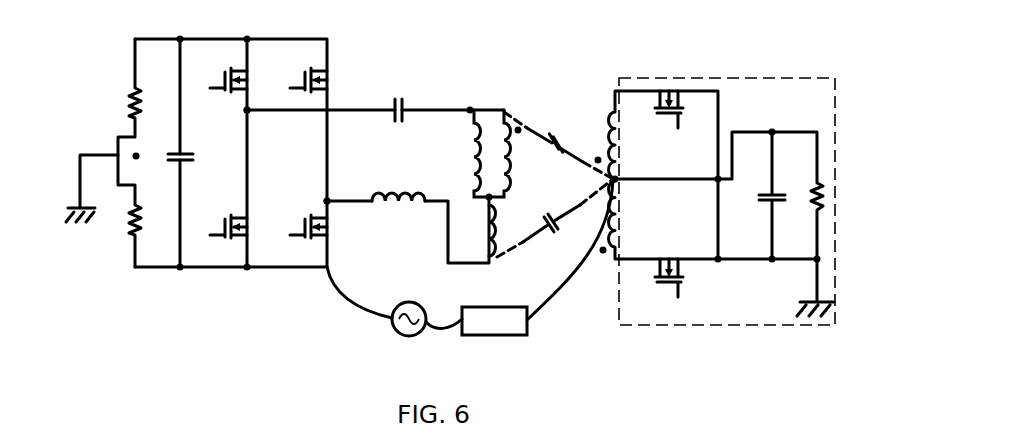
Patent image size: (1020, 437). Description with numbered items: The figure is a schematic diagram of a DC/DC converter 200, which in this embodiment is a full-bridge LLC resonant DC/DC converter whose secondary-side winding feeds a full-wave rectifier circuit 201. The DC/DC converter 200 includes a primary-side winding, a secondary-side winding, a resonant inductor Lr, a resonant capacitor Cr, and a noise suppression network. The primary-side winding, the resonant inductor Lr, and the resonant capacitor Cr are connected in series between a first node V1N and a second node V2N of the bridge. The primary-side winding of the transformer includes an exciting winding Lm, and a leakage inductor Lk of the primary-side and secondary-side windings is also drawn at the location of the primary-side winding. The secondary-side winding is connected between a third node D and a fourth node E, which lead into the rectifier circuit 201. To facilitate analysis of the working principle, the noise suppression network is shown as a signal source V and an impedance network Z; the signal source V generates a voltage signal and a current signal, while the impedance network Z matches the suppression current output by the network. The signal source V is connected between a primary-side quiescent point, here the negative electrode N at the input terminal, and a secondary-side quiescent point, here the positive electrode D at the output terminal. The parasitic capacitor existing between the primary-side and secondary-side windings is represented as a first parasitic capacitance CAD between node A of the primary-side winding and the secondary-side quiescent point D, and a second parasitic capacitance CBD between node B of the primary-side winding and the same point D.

The DC/DC converter 200 is at (98, 31).
The rectifier circuit 201 is at (650, 72).
The resonant capacitor Cr is at (425, 106).
The resonant inductor Lr is at (427, 230).
The exciting winding Lm is at (473, 153).
The leakage inductor Lk is at (476, 230).
The signal source V is at (427, 294).
The impedance network Z is at (494, 321).
The first parasitic capacitance CAD is at (558, 139).
The second parasitic capacitance CBD is at (555, 223).
The first node V1N is at (222, 110).
The second node V2N is at (300, 198).